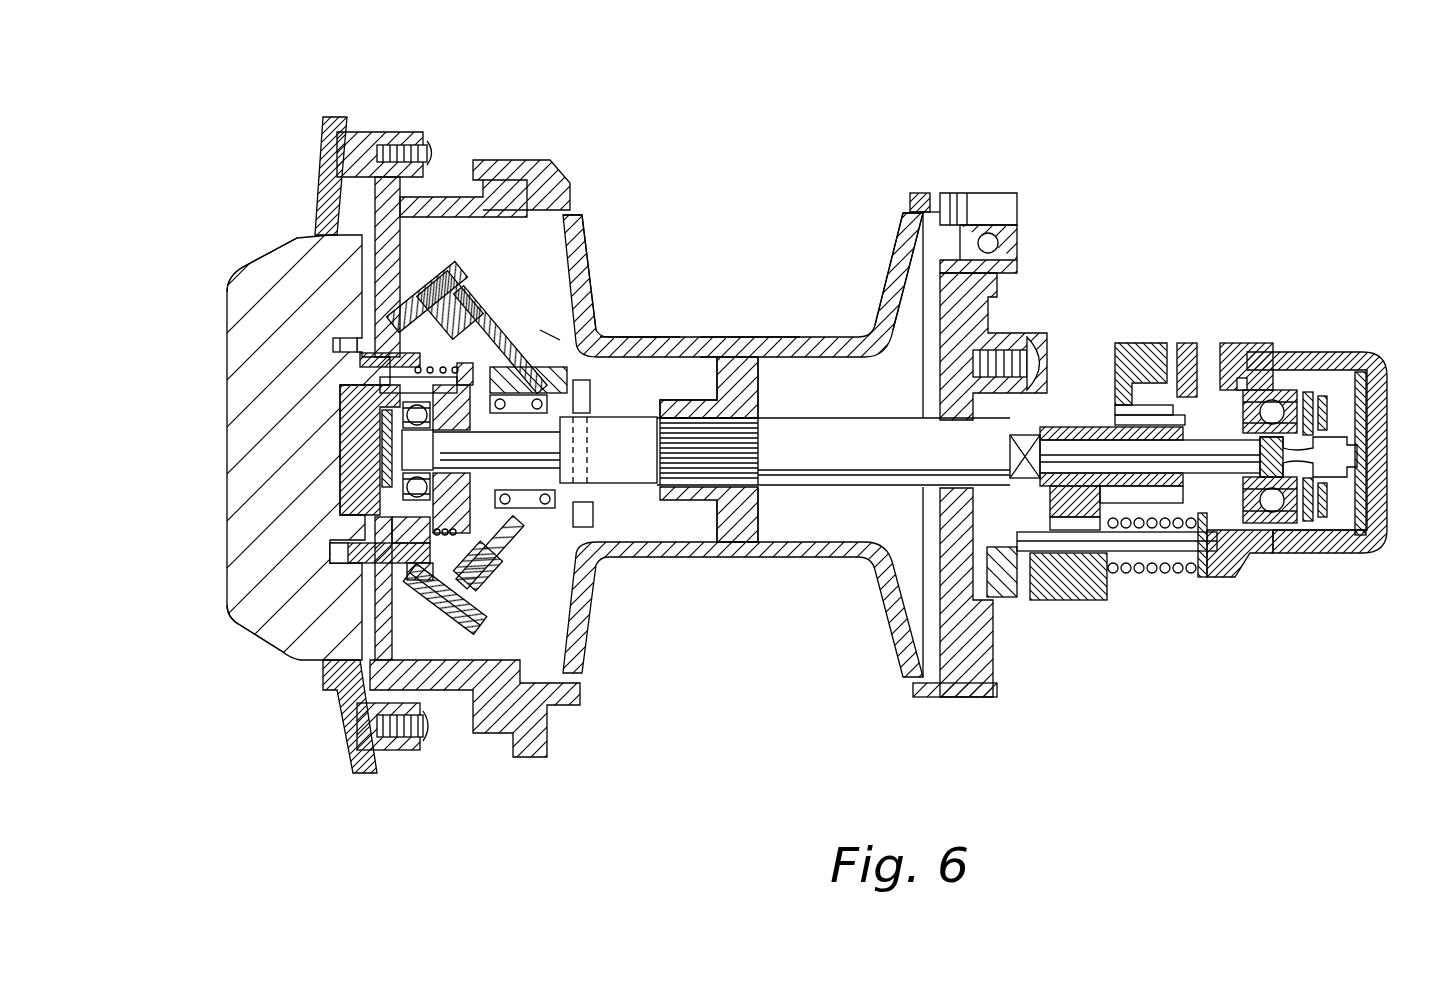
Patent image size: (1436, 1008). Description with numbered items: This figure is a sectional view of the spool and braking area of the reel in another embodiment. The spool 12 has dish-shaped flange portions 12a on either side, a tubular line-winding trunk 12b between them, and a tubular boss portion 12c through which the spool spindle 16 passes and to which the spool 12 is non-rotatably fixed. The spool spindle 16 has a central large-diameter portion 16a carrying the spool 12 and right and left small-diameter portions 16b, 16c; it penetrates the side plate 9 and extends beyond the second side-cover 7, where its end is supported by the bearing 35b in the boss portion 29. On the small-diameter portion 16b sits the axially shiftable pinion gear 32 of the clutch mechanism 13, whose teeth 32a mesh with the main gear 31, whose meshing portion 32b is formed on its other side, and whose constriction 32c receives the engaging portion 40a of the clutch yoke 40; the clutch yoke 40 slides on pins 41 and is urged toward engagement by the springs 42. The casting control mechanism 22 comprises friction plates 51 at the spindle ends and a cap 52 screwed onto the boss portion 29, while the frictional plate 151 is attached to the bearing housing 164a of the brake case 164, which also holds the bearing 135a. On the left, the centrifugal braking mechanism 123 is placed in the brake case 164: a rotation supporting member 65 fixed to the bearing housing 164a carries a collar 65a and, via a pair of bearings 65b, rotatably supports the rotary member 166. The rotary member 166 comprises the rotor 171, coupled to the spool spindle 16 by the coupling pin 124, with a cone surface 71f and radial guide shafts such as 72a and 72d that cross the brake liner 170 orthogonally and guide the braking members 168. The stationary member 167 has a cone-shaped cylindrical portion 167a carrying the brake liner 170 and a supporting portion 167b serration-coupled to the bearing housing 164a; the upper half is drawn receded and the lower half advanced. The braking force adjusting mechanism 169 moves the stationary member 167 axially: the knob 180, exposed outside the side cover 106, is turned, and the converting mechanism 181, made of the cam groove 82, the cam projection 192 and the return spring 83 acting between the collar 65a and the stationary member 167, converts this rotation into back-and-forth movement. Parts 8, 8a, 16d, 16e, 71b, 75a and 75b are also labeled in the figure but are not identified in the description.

The second side-cover 7 is at (1235, 552).
The stator housing 8 is at (547, 732).
The stator housing flange 8a is at (571, 183).
The side plate 9 is at (990, 307).
The spool 12 is at (773, 333).
The flange portions 12a is at (583, 242).
The line-winding trunk 12b is at (742, 337).
The boss portion 12c is at (758, 388).
The clutch mechanism 13 is at (1000, 446).
The spool spindle 16 is at (797, 465).
The large-diameter portion 16a is at (840, 465).
The small-diameter portion 16b is at (1133, 552).
The small-diameter portion 16c is at (543, 453).
The shaft boss 16d is at (695, 470).
The shaft shoulder 16e is at (1020, 600).
The casting control mechanism 22 is at (1344, 333).
The boss portion 29 is at (1265, 395).
The main gear 31 is at (1123, 343).
The pinion gear 32 is at (1077, 420).
The teeth 32a is at (1187, 413).
The meshing portion 32b is at (1025, 553).
The constriction 32c is at (1058, 427).
The bearing 35b is at (1262, 382).
The clutch yoke 40 is at (1097, 587).
The engaging portion 40a is at (1167, 343).
The pins 41 is at (1163, 572).
The spring 42 is at (1190, 572).
The friction plates 51 is at (1362, 413).
The cap 52 is at (1368, 542).
The rotation supporting member 65 is at (620, 335).
The collar 65a is at (460, 368).
The bearings 65b is at (650, 337).
The needle bearing 71b is at (595, 508).
The cone surface 71f is at (500, 565).
The guide shaft 72a is at (538, 393).
The guide shaft 72d is at (533, 545).
The screw 75a is at (393, 147).
The screw 75b is at (410, 742).
The cam groove 82 is at (342, 330).
The return spring 83 is at (347, 358).
The side cover 106 is at (347, 740).
The centrifugal braking mechanism 123 is at (224, 430).
The coupling pin 124 is at (586, 404).
The bearing 135a is at (387, 490).
The frictional plate 151 is at (337, 476).
The brake case 164 is at (510, 192).
The bearing housing 164a is at (347, 388).
The rotary member 166 is at (550, 335).
The stationary member 167 is at (493, 628).
The cylindrical portion 167a is at (440, 287).
The supporting portion 167b is at (413, 567).
The braking members 168 is at (500, 313).
The braking force adjusting mechanism 169 is at (405, 490).
The brake liner 170 is at (470, 285).
The rotor 171 is at (591, 395).
The knob 180 is at (267, 633).
The converting mechanism 181 is at (329, 566).
The cam projection 192 is at (345, 335).